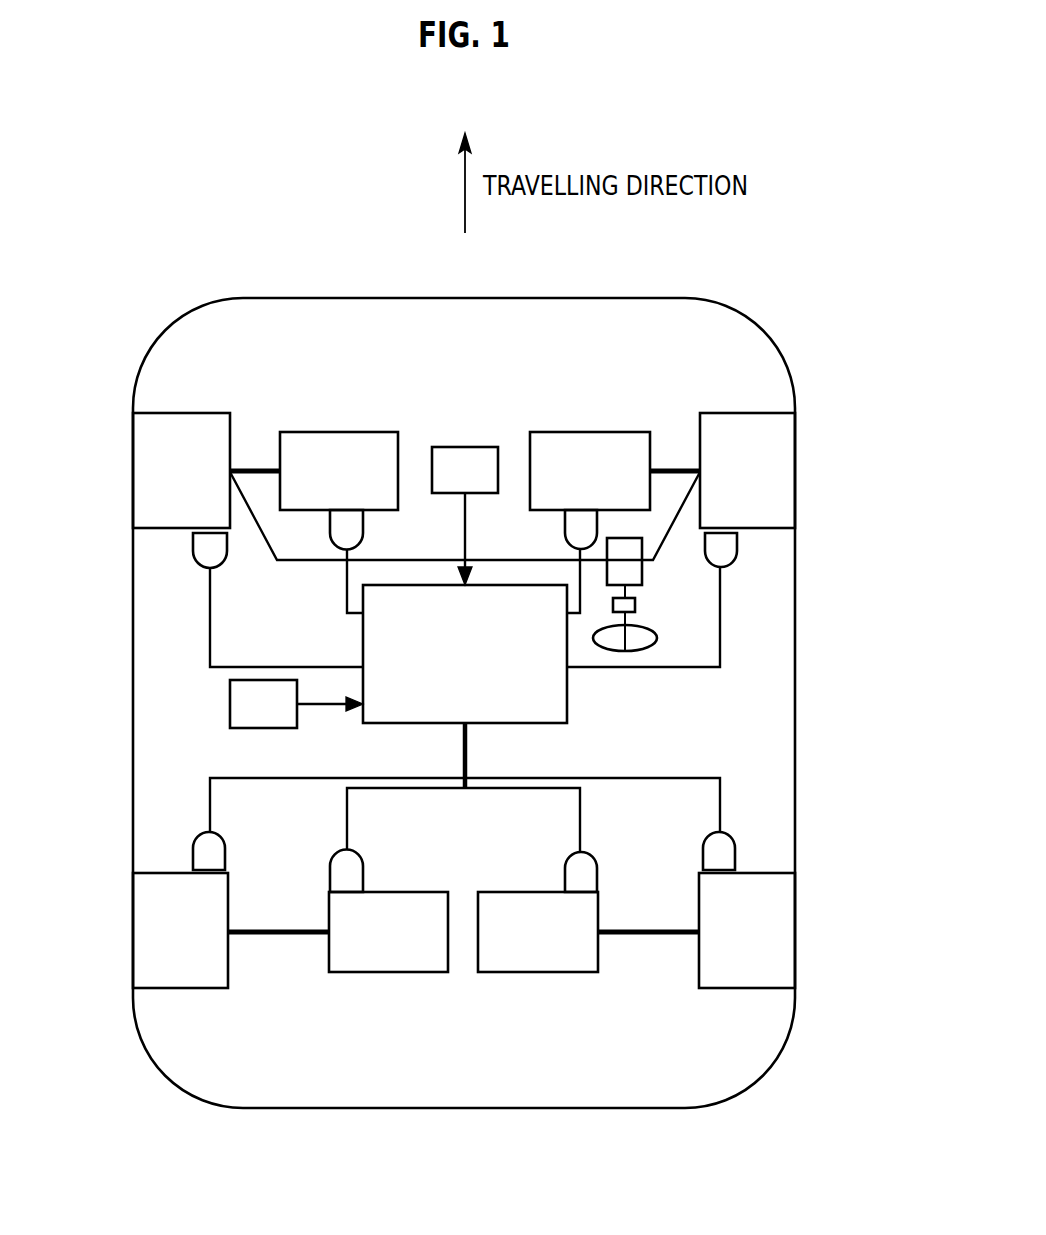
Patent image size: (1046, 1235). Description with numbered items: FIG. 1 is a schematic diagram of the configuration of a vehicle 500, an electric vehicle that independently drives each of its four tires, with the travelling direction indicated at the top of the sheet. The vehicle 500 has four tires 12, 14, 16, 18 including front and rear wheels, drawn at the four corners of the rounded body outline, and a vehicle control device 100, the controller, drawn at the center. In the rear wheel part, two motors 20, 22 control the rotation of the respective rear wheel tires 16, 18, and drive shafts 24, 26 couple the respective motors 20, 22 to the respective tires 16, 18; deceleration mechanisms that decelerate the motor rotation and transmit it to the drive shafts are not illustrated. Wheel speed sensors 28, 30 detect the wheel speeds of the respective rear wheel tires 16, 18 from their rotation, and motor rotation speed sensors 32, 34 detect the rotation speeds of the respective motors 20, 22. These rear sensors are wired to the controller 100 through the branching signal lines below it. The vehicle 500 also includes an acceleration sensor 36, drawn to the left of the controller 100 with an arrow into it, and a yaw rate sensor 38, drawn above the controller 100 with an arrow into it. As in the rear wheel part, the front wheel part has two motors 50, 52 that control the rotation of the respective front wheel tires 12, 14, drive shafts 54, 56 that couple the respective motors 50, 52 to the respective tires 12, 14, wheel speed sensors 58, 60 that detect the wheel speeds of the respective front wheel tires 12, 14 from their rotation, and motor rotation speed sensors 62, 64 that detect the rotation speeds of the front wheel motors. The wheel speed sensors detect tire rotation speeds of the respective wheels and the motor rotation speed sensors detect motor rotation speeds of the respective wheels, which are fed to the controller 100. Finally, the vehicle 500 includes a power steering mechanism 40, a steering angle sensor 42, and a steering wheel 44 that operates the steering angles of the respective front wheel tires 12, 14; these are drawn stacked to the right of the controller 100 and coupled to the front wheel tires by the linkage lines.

The tire 12 is at (155, 440).
The tire 14 is at (775, 438).
The tire 16 is at (152, 970).
The tire 18 is at (773, 970).
The motor 20 is at (391, 972).
The motor 22 is at (541, 972).
The drive shaft 24 is at (282, 936).
The drive shaft 26 is at (650, 936).
The wheel speed sensor 28 is at (199, 838).
The wheel speed sensor 30 is at (733, 840).
The motor rotation speed sensor 32 is at (334, 858).
The motor rotation speed sensor 34 is at (595, 858).
The acceleration sensor 36 is at (230, 704).
The yaw rate sensor 38 is at (463, 447).
The power steering mechanism 40 is at (643, 572).
The steering angle sensor 42 is at (637, 606).
The steering wheel 44 is at (657, 638).
The motor 50 is at (336, 432).
The motor 52 is at (588, 432).
The drive shaft 54 is at (252, 466).
The drive shaft 56 is at (674, 466).
The wheel speed sensor 58 is at (195, 542).
The wheel speed sensor 60 is at (739, 545).
The motor rotation speed sensor 62 is at (365, 524).
The motor rotation speed sensor 64 is at (563, 526).
The vehicle control device 100 is at (568, 700).
The vehicle 500 is at (740, 1215).